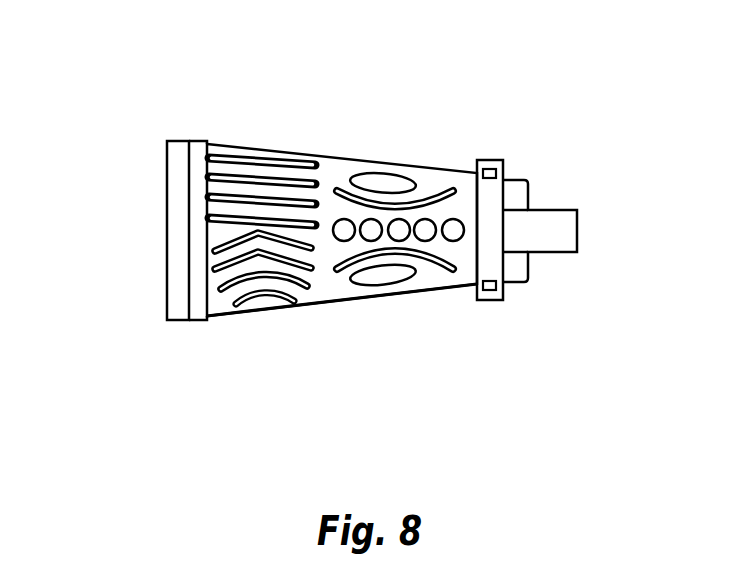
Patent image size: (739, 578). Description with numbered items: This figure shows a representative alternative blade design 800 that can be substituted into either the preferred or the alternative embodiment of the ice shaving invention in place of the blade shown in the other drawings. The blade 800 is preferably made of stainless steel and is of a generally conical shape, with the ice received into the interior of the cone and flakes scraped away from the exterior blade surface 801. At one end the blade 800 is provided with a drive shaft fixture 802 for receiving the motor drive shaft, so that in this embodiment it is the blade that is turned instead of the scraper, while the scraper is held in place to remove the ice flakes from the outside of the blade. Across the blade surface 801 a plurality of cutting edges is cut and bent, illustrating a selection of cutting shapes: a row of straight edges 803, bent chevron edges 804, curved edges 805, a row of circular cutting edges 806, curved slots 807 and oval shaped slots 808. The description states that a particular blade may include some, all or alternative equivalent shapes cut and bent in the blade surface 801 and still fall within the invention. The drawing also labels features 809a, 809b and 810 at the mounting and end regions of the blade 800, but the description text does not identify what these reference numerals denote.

The alternative blade design 800 is at (296, 280).
The blade surface 801 is at (403, 290).
The drive shaft fixture 802 is at (553, 220).
The straight edges 803 is at (265, 155).
The bent chevron edges 804 is at (228, 253).
The curved edges 805 is at (261, 297).
The circular cutting edges 806 is at (428, 226).
The curved slots 807 is at (341, 190).
The oval shaped slots 808 is at (391, 176).
The upper fastener opening 809a is at (497, 172).
The lower fastener opening 809b is at (490, 290).
The end flange 810 is at (177, 165).